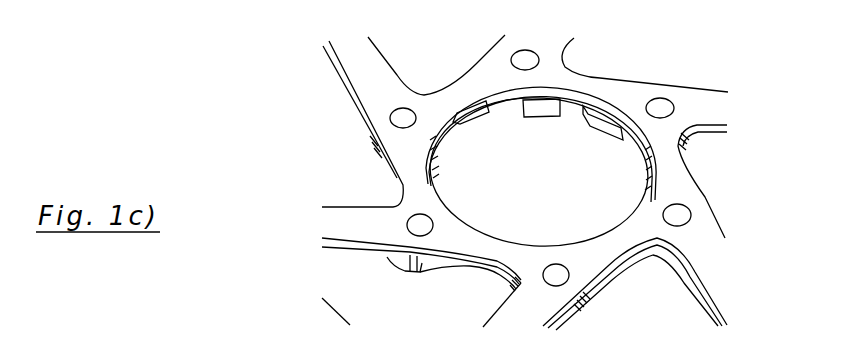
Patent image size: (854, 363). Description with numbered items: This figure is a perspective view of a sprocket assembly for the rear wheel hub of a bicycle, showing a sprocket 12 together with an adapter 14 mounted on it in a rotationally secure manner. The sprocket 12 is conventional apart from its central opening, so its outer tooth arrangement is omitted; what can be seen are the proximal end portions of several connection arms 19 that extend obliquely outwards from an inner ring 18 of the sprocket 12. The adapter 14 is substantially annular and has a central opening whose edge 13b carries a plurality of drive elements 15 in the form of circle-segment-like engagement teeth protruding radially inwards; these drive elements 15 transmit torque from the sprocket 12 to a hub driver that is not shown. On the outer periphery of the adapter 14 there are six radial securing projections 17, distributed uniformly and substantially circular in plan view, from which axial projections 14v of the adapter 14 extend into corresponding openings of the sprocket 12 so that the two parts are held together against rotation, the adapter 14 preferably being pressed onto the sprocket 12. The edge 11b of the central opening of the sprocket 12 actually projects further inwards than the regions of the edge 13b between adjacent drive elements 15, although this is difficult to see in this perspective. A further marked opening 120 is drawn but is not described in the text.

The sprocket 12 is at (709, 82).
The edge of the central opening 11b is at (505, 97).
The drive elements 15 is at (543, 106).
The edge of the central opening 13b is at (582, 113).
The bolt hole 120 is at (519, 67).
The axial projections 14v is at (676, 220).
The adapter 14 is at (431, 285).
The radial securing projections 17 is at (680, 264).
The inner ring 18 is at (588, 85).
The connection arms 19 is at (378, 80).